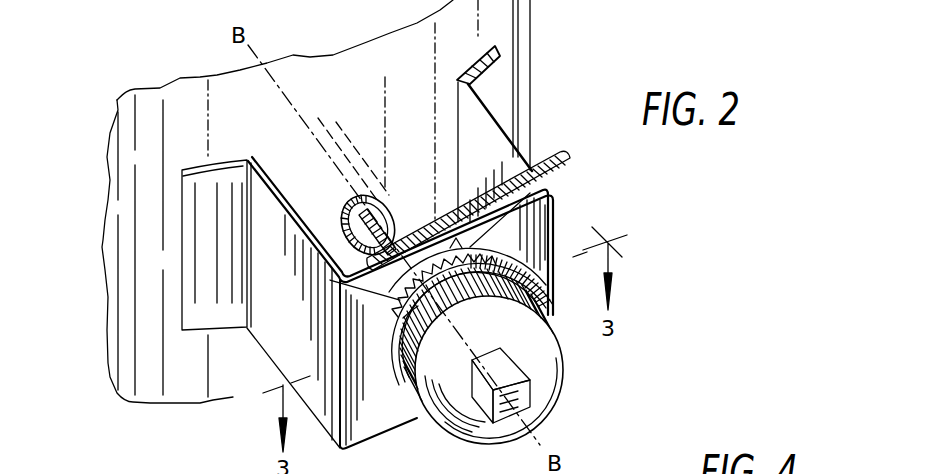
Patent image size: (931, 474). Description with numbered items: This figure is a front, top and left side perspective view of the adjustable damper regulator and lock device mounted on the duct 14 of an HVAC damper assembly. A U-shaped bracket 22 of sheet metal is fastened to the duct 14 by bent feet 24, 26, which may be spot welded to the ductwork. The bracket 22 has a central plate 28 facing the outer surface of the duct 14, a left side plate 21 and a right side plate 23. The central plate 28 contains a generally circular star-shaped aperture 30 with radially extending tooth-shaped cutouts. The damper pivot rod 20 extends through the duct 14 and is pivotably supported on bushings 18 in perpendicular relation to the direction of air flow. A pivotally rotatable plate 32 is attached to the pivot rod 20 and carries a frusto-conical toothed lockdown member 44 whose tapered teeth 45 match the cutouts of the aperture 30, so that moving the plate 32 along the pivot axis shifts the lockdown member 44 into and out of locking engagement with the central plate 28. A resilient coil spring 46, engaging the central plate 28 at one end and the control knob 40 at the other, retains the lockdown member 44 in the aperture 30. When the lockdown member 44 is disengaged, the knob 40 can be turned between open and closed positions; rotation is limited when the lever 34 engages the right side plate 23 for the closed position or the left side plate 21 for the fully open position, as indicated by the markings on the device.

The duct 14 is at (336, 98).
The bushings 18 is at (354, 198).
The damper pivot rod 20 is at (412, 222).
The left side plate 21 is at (287, 304).
The U-shaped bracket 22 is at (555, 300).
The right side plate 23 is at (533, 162).
The bent foot 24 is at (205, 315).
The bent foot 26 is at (497, 68).
The central plate 28 is at (374, 431).
The star-shaped aperture 30 is at (403, 318).
The pivotally rotatable plate 32 is at (352, 247).
The lever 34 is at (566, 159).
The control knob 40 is at (533, 363).
The toothed lockdown member 44 is at (548, 214).
The tapered teeth 45 is at (415, 323).
The resilient coil spring 46 is at (553, 240).